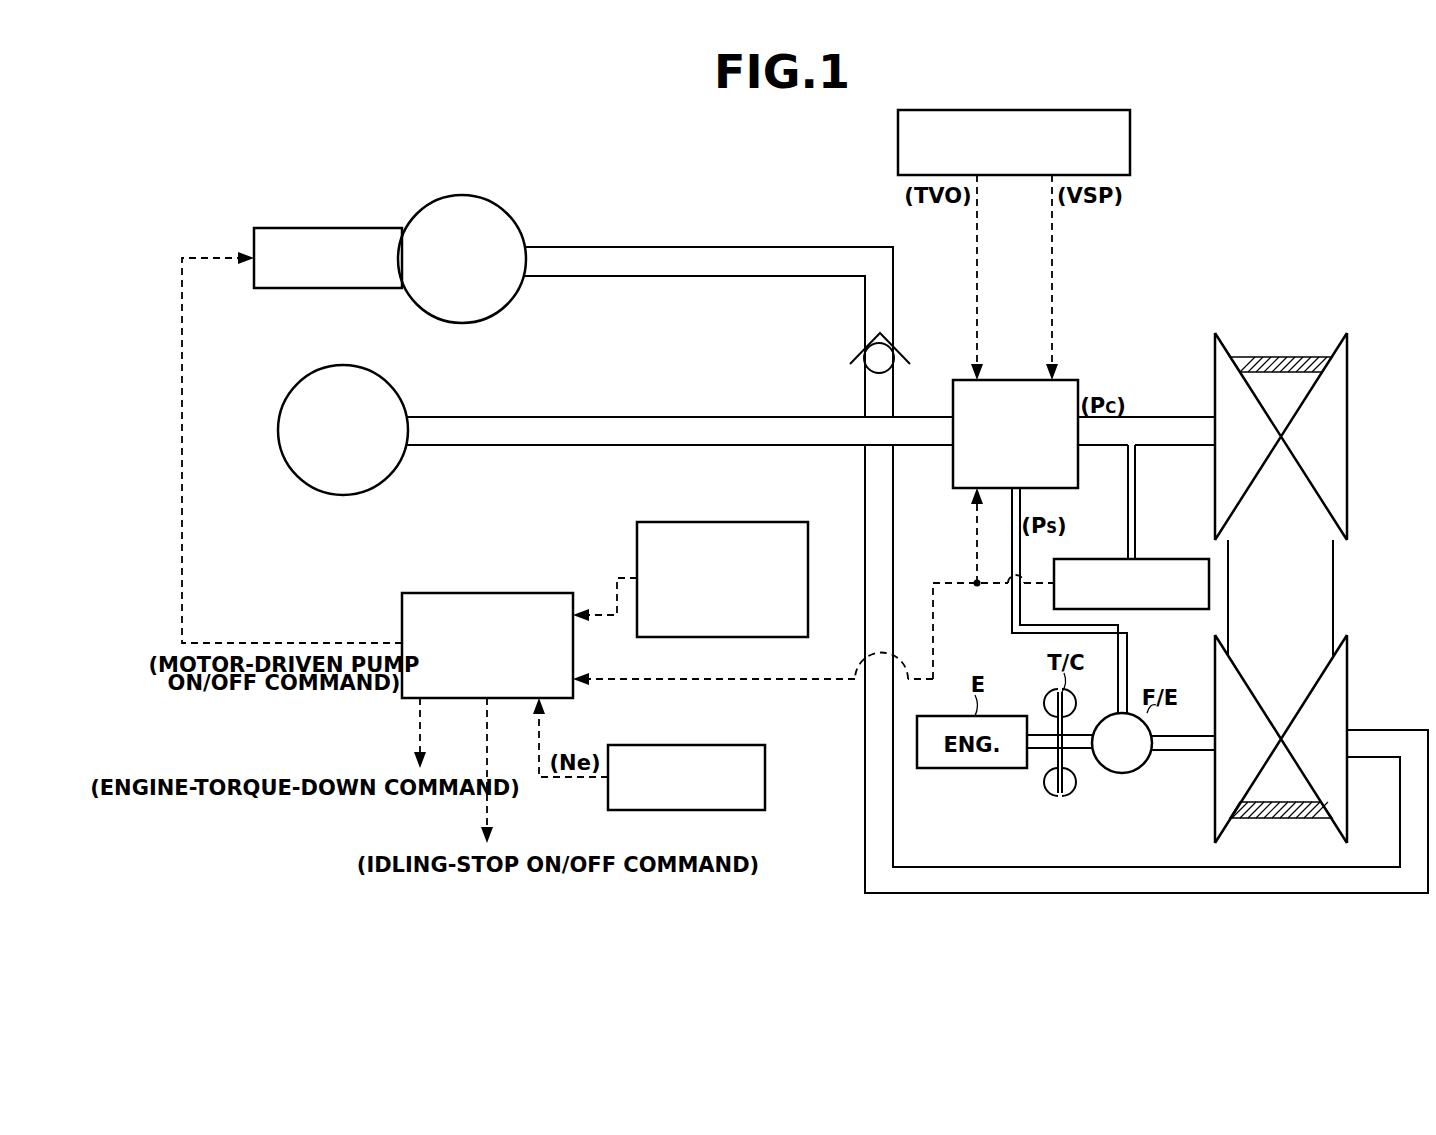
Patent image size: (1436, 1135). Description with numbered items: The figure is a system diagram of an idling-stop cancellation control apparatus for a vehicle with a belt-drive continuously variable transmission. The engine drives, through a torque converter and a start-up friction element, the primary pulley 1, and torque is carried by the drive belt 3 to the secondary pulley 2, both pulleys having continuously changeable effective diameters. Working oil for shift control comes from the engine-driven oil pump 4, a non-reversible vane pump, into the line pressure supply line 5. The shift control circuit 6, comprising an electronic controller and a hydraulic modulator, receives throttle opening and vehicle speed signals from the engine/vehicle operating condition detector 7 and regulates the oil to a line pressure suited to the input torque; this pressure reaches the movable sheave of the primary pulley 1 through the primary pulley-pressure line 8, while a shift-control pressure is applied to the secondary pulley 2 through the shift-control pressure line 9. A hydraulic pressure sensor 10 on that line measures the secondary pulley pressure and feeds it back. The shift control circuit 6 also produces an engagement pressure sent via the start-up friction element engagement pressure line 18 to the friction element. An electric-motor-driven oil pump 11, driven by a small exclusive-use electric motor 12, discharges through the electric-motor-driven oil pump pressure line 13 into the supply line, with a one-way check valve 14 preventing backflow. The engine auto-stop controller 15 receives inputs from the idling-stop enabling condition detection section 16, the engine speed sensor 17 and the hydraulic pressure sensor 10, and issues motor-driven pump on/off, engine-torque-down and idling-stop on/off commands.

The primary pulley 1 is at (1347, 663).
The secondary pulley 2 is at (1347, 393).
The drive belt 3 is at (1280, 357).
The engine-driven oil pump 4 is at (343, 365).
The line pressure supply line 5 is at (612, 417).
The shift control circuit 6 is at (1070, 380).
The engine/vehicle operating condition detector 7 is at (1130, 138).
The primary pulley-pressure line 8 is at (865, 812).
The shift-control pressure line 9 is at (1108, 449).
The hydraulic pressure sensor 10 is at (1173, 559).
The electric-motor-driven oil pump 11 is at (462, 195).
The electric motor 12 is at (346, 228).
The electric-motor-driven oil pump pressure line 13 is at (667, 247).
The one-way check valve 14 is at (877, 355).
The engine auto-stop controller 15 is at (535, 593).
The idling-stop enabling condition detection section 16 is at (768, 522).
The engine speed sensor 17 is at (727, 745).
The start-up friction element engagement pressure line 18 is at (1012, 618).